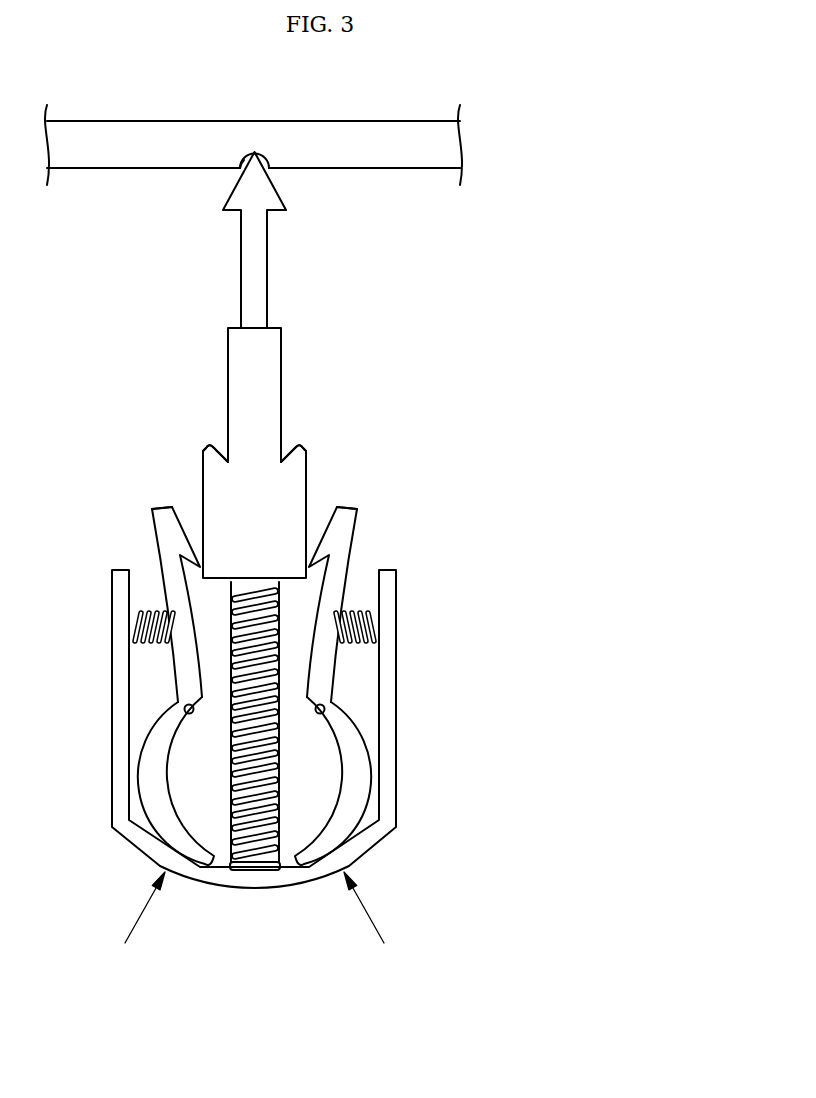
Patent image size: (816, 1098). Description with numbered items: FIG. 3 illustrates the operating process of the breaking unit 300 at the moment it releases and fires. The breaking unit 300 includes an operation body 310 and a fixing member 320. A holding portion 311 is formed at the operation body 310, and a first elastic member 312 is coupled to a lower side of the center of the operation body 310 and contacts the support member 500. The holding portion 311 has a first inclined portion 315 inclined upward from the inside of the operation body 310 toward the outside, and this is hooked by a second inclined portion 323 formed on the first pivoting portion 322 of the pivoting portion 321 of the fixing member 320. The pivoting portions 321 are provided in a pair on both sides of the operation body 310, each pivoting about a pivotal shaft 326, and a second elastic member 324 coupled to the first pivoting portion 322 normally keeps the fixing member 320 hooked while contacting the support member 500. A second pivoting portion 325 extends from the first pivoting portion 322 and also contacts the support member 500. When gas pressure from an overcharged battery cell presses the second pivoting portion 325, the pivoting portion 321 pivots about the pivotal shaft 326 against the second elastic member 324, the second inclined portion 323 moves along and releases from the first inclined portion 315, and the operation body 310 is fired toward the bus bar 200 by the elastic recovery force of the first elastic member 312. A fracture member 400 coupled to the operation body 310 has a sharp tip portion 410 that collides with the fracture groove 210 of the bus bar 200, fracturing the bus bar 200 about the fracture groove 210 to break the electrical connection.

The bus bar 200 is at (385, 121).
The sharp tip portion 410 is at (254, 151).
The fracture groove 210 is at (240, 166).
The fracture member 400 is at (268, 270).
The breaking unit 300 is at (159, 343).
The operation body 310 is at (304, 349).
The first inclined portion 315 is at (294, 445).
The holding portion 311 is at (303, 447).
The first elastic member 312 is at (257, 848).
The support member 500 is at (400, 675).
The first pivoting portion 322 is at (354, 561).
The second inclined portion 323 is at (354, 510).
The second pivoting portion 325 is at (357, 777).
The pivotal shaft 326 is at (331, 703).
The second elastic member 324 is at (355, 607).
The pivoting portion 321 is at (461, 538).
The fixing member 320 is at (535, 571).